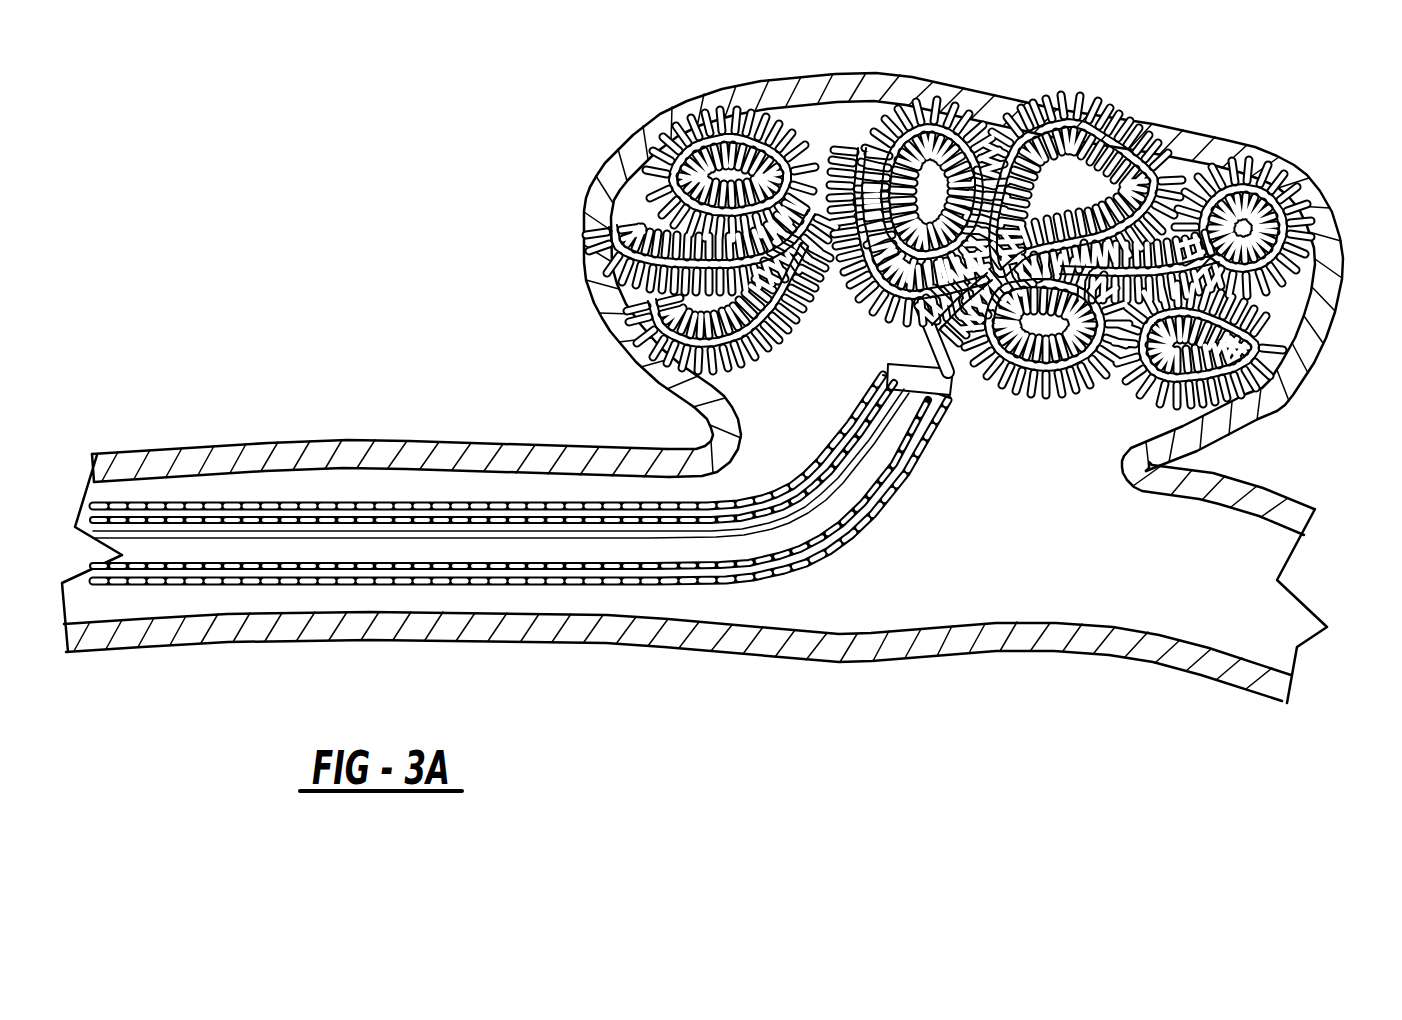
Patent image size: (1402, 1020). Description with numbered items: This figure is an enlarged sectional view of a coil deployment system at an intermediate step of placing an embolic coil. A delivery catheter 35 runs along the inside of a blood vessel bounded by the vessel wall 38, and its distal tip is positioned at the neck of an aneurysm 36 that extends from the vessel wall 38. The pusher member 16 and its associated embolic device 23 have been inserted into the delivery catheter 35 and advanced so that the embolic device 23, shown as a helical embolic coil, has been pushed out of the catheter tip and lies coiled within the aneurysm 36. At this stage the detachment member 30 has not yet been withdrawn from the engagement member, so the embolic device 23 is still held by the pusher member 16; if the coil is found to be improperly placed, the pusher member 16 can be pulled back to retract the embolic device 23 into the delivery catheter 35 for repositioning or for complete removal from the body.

The pusher member 16 is at (275, 520).
The embolic device 23 is at (1038, 423).
The detachment member 30 is at (270, 538).
The delivery catheter 35 is at (183, 505).
The aneurysm 36 is at (1293, 167).
The vessel wall 38 is at (508, 447).